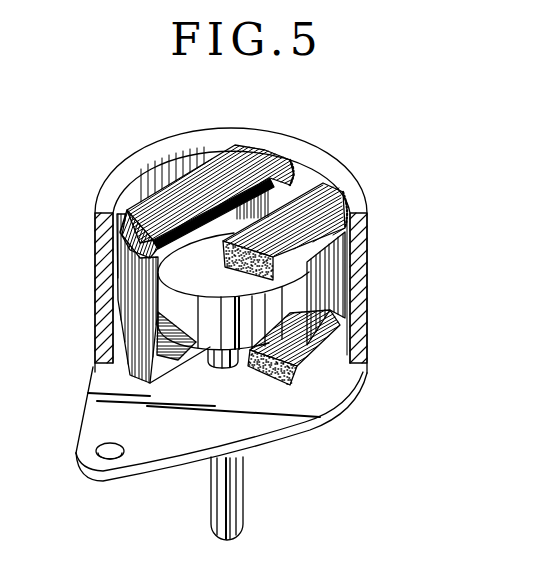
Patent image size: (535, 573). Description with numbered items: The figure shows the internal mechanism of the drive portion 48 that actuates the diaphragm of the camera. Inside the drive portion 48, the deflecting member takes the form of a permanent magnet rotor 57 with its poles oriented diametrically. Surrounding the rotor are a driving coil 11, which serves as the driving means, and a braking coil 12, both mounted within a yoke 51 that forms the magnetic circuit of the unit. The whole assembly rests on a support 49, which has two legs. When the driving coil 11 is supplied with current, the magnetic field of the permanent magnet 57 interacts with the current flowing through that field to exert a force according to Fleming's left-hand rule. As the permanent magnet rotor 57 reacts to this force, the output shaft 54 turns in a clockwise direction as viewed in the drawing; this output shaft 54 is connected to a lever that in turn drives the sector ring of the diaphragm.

The driving coil 11 is at (243, 147).
The braking coil 12 is at (340, 188).
The drive portion 48 is at (307, 148).
The support 49 is at (163, 450).
The yoke 51 is at (364, 301).
The output shaft 54 is at (240, 506).
The permanent magnet rotor 57 is at (212, 335).